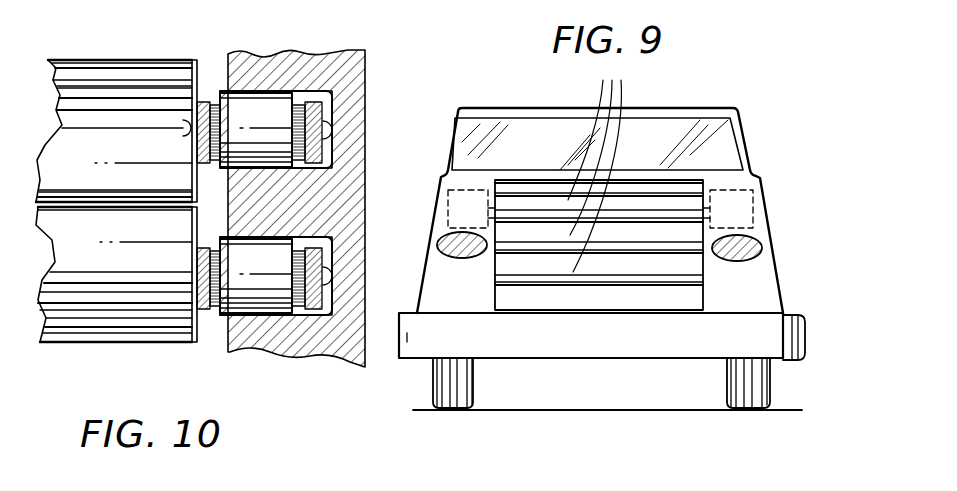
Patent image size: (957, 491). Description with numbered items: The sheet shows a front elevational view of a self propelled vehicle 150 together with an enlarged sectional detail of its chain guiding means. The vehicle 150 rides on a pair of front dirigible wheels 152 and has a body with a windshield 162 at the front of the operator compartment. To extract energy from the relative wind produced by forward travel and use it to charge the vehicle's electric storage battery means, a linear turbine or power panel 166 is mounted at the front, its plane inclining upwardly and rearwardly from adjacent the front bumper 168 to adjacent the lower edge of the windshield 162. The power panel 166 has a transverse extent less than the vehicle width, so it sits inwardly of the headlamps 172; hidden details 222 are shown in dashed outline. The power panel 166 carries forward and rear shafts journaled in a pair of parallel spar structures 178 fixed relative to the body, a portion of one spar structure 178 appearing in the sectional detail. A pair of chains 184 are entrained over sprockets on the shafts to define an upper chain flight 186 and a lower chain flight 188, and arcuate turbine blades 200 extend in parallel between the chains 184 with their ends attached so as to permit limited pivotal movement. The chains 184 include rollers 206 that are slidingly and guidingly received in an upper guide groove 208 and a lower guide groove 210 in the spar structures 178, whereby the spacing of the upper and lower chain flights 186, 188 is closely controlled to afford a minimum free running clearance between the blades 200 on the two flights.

In FIG. 9, the self propelled vehicle 150 is at (764, 154).
In FIG. 9, the front dirigible wheels 152 is at (455, 390).
In FIG. 9, the windshield 162 is at (688, 118).
In FIG. 9, the power panel 166 is at (597, 296).
In FIG. 9, the front bumper 168 is at (795, 343).
In FIG. 9, the headlamps 172 is at (462, 262).
In FIG. 10, the spar structures 178 is at (350, 165).
In FIG. 10, the chains 184 is at (331, 135).
In FIG. 10, the upper chain flight 186 is at (302, 58).
In FIG. 10, the lower chain flight 188 is at (300, 232).
In FIG. 9, the turbine blades 200 is at (598, 166).
In FIG. 10, the turbine blades 200 is at (115, 110).
In FIG. 10, the rollers 206 is at (272, 163).
In FIG. 10, the upper guide groove 208 is at (254, 80).
In FIG. 10, the lower guide groove 210 is at (245, 237).
In FIG. 9, the mounting location (phantom) 222 is at (442, 200).